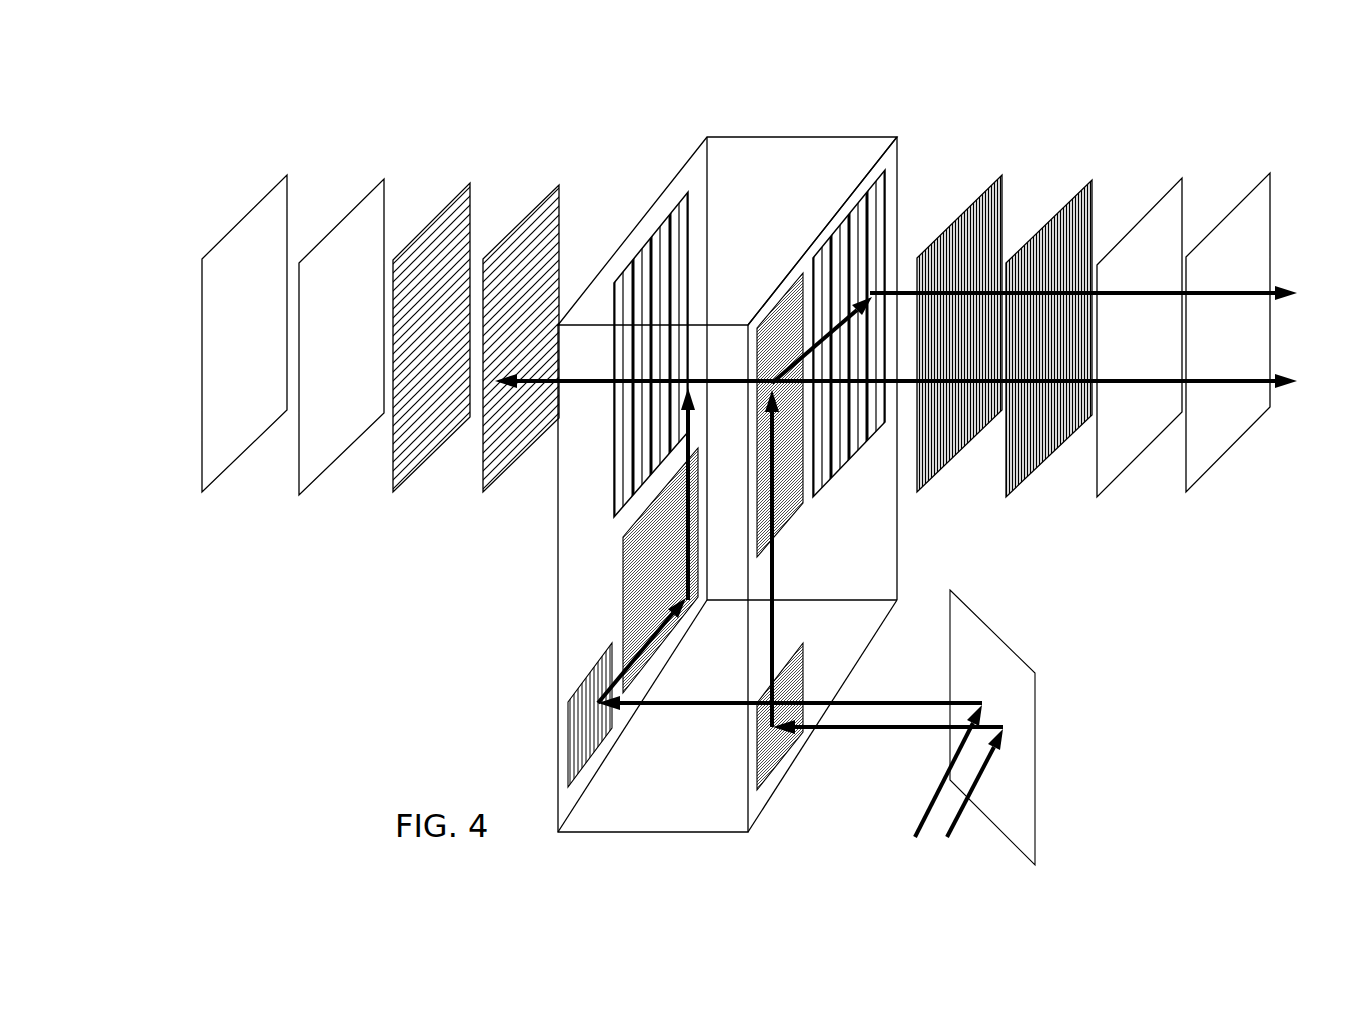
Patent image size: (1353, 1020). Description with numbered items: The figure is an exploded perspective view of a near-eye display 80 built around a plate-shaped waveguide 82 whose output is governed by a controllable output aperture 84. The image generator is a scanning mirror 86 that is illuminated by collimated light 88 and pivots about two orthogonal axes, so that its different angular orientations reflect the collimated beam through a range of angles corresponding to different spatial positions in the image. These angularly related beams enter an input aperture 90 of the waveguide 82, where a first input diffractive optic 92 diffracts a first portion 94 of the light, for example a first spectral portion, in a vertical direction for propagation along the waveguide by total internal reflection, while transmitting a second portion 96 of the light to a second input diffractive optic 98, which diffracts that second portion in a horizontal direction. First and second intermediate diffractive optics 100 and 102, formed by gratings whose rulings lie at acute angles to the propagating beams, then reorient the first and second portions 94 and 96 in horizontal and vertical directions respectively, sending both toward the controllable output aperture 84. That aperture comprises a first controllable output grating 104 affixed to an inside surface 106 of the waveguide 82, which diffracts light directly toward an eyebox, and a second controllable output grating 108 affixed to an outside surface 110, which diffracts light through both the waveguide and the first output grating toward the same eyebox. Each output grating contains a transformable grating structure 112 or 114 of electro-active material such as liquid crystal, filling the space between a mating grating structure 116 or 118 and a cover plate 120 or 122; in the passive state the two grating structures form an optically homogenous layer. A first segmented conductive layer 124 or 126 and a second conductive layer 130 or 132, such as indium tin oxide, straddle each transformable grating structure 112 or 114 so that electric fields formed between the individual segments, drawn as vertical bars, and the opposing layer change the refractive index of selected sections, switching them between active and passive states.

The near-eye display 80 is at (727, 423).
The plate-shaped waveguide 82 is at (727, 457).
The controllable output aperture 84 is at (898, 184).
The scanning mirror 86 is at (1038, 710).
The collimated light 88 is at (924, 786).
The input aperture 90 is at (816, 690).
The first input diffractive optic 92 is at (775, 760).
The first portion of the light 94 is at (774, 618).
The second portion of the light 96 is at (683, 702).
The second input diffractive optic 98 is at (578, 753).
The first intermediate diffractive optic 100 is at (795, 505).
The second intermediate diffractive optic 102 is at (623, 583).
The first controllable output grating 104 is at (1097, 314).
The inside surface 106 is at (897, 585).
The second controllable output grating 108 is at (380, 320).
The outside surface 110 is at (681, 165).
The transformable grating structure 112 is at (1040, 466).
The transformable grating structure 114 is at (397, 468).
The mating grating structure 116 is at (945, 466).
The mating grating structure 118 is at (490, 465).
The cover plate 120 is at (1205, 455).
The cover plate 122 is at (273, 217).
The first segmented conductive layer 124 is at (837, 452).
The first segmented conductive layer 126 is at (612, 428).
The second conductive layer 130 is at (1113, 455).
The second conductive layer 132 is at (303, 468).